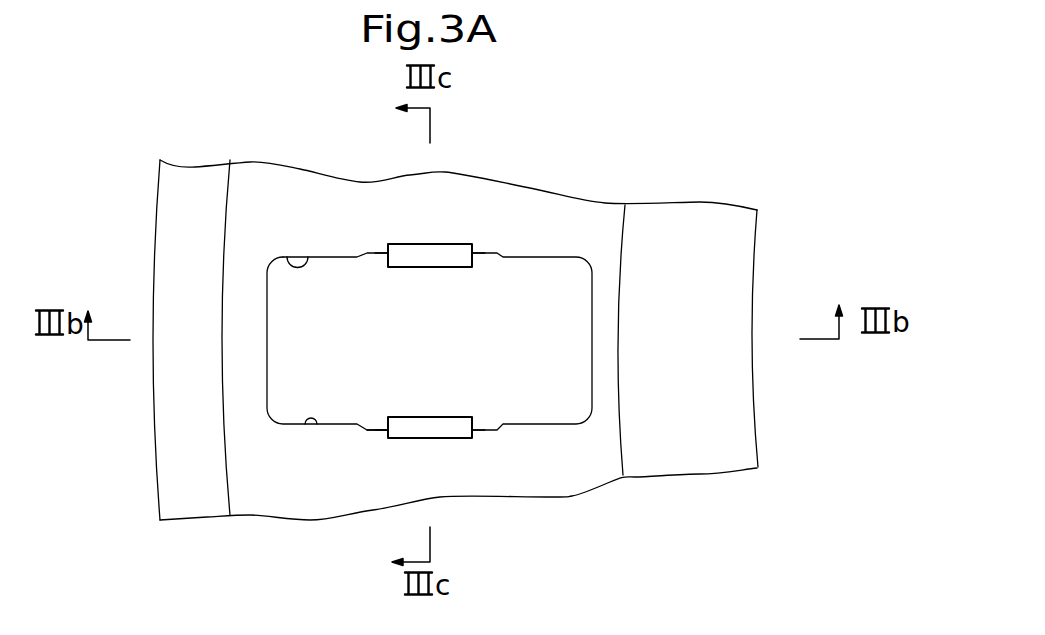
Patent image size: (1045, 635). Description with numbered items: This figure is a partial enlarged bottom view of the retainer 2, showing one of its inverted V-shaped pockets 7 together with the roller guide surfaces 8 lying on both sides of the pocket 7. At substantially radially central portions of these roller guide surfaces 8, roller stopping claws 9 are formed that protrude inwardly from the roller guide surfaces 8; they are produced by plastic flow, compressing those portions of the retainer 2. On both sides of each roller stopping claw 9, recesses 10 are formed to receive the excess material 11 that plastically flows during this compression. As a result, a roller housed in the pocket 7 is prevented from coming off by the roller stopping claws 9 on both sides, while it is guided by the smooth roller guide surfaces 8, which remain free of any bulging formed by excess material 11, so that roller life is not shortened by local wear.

The base body 2 is at (153, 225).
The pocket 7 is at (547, 287).
The roller guide surface 8 is at (287, 257).
The roller stopping claw 9 is at (443, 257).
The recess 10 is at (377, 252).
The excess material 11 is at (380, 440).